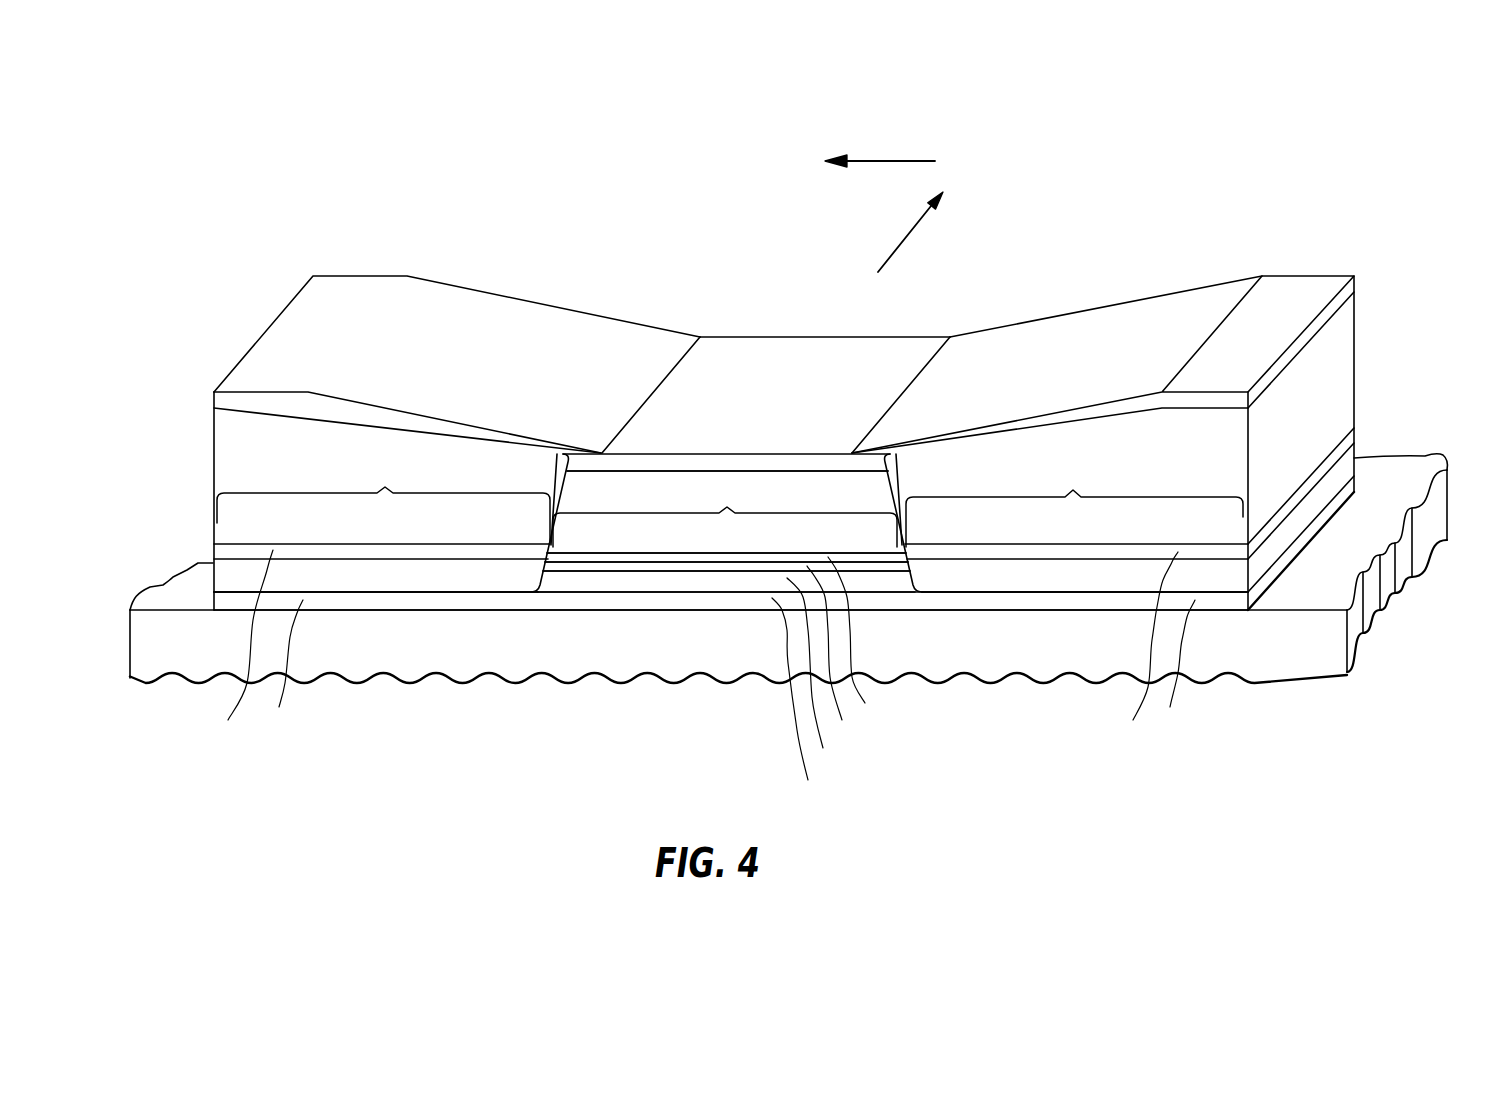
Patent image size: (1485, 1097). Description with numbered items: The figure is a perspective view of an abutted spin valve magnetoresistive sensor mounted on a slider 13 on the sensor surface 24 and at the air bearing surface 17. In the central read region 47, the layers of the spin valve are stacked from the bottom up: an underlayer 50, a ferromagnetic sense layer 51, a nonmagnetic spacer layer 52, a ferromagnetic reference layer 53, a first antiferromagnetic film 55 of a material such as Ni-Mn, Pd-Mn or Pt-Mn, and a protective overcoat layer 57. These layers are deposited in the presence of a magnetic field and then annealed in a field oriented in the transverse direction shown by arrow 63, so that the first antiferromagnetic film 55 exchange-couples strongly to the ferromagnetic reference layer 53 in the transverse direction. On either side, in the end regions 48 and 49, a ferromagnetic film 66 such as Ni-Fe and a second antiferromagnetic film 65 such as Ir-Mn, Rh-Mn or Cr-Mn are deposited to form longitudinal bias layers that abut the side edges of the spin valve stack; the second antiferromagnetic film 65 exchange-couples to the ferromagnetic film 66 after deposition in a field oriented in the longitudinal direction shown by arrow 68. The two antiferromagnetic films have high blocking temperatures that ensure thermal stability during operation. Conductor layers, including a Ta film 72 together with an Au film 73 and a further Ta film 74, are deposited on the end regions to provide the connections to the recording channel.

The slider 13 is at (1432, 463).
The air bearing surface 17 is at (1303, 665).
The sensor surface 24 is at (1383, 477).
The read region 47 is at (725, 512).
The end region 48 is at (383, 497).
The end region 49 is at (1074, 501).
The underlayer 50 is at (643, 598).
The ferromagnetic sense layer 51 is at (628, 578).
The nonmagnetic spacer layer 52 is at (610, 566).
The ferromagnetic reference layer 53 is at (583, 557).
The first antiferromagnetic film 55 is at (870, 493).
The protective overcoat layer 57 is at (740, 336).
The arrow 63 is at (908, 237).
The second antiferromagnetic film 65 is at (433, 580).
The ferromagnetic film 66 is at (465, 600).
The arrow 68 is at (883, 161).
The Ta film 72 is at (213, 552).
The gold conductor layer 73 is at (213, 452).
The tantalum cap layer of lead 74 is at (213, 400).